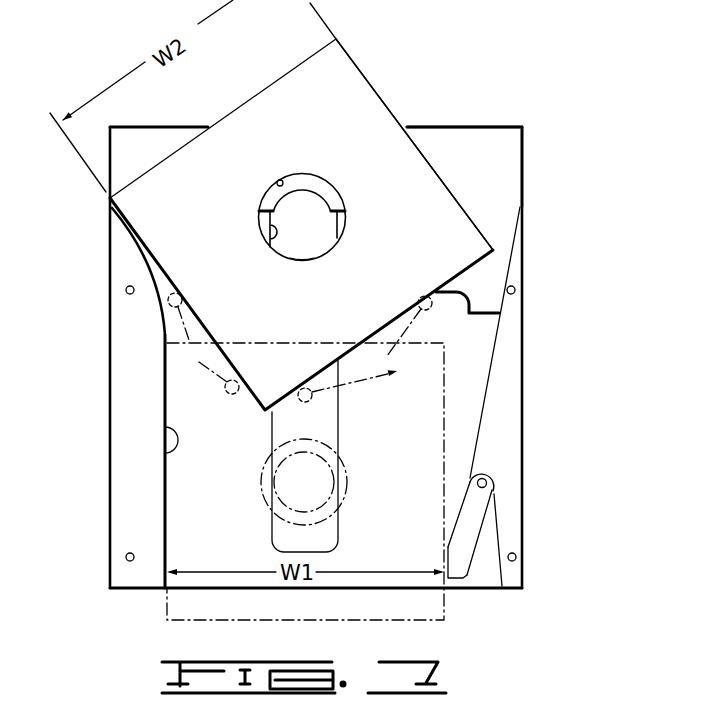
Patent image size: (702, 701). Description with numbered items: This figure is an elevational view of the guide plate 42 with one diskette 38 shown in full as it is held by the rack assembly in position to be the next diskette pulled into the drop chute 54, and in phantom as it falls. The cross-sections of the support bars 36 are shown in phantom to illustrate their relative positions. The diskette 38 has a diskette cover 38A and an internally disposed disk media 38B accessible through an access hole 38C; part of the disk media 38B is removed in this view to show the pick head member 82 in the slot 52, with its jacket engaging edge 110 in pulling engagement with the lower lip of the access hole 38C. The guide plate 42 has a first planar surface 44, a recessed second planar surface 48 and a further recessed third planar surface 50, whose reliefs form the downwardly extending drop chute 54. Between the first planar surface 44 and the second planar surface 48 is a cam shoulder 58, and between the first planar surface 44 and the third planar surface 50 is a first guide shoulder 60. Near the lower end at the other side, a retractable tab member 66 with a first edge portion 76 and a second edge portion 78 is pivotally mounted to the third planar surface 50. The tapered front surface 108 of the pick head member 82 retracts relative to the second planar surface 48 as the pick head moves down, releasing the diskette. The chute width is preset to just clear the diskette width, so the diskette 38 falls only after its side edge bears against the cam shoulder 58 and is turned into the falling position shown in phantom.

The support bars 36 is at (200, 365).
The diskette 38 is at (380, 113).
The diskette cover 38A is at (358, 88).
The disk media 38B is at (322, 187).
The access hole 38C is at (281, 181).
The guide plate 42 is at (482, 112).
The first planar surface 44 is at (127, 400).
The second planar surface 48 is at (501, 158).
The third planar surface 50 is at (488, 332).
The slot 52 is at (276, 234).
The drop chute 54 is at (196, 515).
The cam shoulder 58 is at (137, 240).
The first guide shoulder 60 is at (164, 454).
The retractable tab member 66 is at (467, 576).
The first edge portion 76 is at (458, 512).
The second edge portion 78 is at (446, 557).
The pick head member 82 is at (313, 215).
The front surface 108 is at (322, 231).
The jacket engaging edge 110 is at (310, 253).